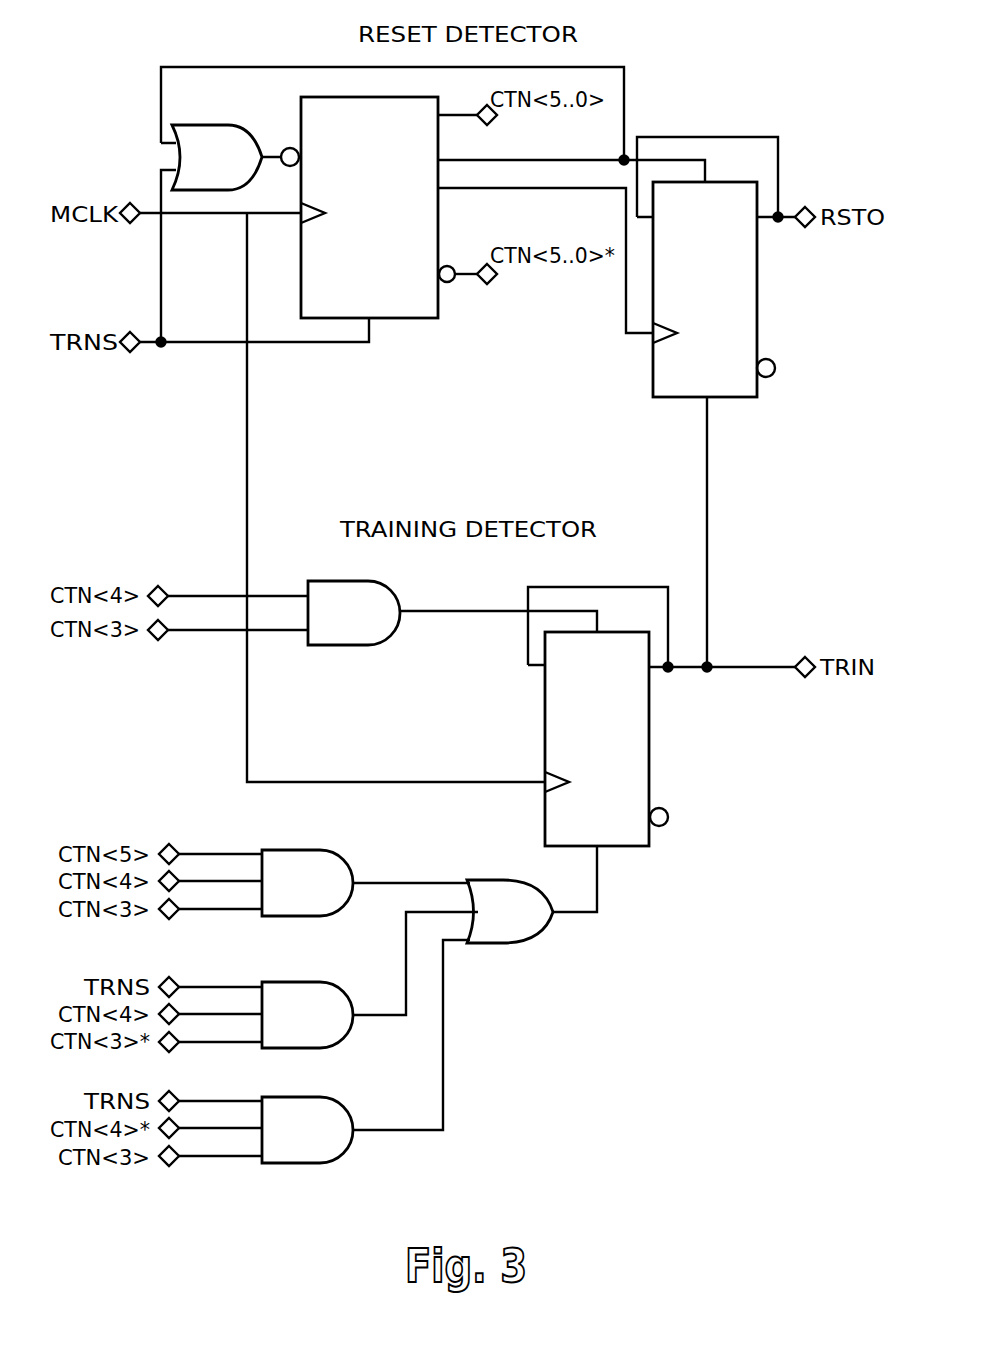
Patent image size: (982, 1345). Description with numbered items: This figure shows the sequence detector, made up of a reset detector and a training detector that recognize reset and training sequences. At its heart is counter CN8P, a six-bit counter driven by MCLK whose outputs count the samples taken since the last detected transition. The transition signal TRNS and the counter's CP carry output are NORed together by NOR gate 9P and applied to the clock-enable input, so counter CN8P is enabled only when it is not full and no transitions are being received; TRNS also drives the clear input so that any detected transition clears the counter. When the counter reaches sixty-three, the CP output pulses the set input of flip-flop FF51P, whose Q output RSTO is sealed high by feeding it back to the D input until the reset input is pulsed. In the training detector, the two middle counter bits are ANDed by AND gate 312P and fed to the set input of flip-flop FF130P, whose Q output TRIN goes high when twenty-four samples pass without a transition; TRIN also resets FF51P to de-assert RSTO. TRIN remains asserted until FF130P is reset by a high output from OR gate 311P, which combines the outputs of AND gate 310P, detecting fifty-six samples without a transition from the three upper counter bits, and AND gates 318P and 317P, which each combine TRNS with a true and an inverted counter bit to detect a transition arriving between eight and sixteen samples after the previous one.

The NOR gate 9P is at (236, 157).
The six-bit counter CN8P is at (369, 207).
The flip-flop FF51P is at (714, 290).
The AND gate 312P is at (354, 613).
The flip-flop FF130P is at (606, 739).
The AND gate 310P is at (307, 883).
The OR gate 311P is at (510, 911).
The AND gate 318P is at (307, 1015).
The AND gate 317P is at (307, 1130).